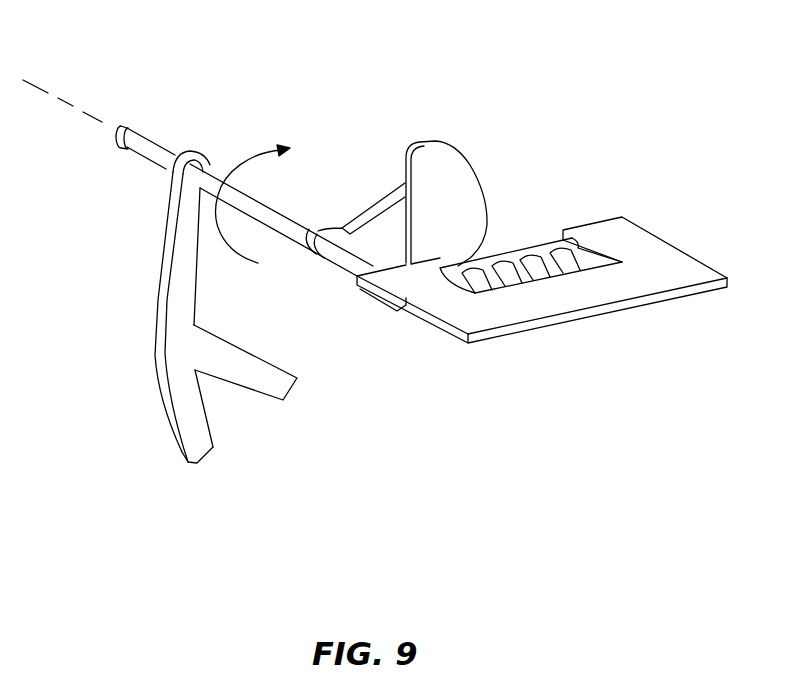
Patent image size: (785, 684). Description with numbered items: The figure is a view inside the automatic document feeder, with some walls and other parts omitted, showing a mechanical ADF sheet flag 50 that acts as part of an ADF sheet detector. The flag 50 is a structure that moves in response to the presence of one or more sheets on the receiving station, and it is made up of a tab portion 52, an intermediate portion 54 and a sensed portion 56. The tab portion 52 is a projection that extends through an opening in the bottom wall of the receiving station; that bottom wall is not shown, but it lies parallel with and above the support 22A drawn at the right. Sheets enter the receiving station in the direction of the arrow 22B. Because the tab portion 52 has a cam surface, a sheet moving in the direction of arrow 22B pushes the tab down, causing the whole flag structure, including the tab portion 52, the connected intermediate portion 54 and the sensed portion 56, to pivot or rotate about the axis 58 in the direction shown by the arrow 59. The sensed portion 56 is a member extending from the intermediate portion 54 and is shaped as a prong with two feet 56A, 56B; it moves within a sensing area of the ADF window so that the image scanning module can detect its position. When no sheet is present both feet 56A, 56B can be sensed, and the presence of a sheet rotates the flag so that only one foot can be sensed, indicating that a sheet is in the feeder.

The ADF sheet flag 50 is at (128, 198).
The tab portion 52 is at (458, 190).
The intermediate portion 54 is at (150, 143).
The sensed portion 56 is at (220, 327).
The foot 56A is at (203, 443).
The foot 56B is at (275, 386).
The axis 58 is at (67, 102).
The arrow 59 is at (258, 263).
The support 22A is at (483, 317).
The arrow 22B is at (503, 230).